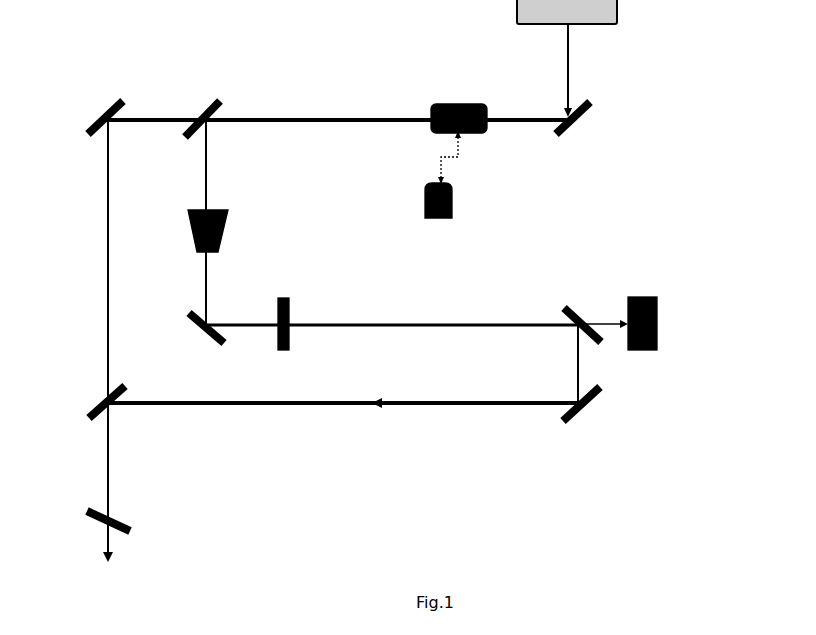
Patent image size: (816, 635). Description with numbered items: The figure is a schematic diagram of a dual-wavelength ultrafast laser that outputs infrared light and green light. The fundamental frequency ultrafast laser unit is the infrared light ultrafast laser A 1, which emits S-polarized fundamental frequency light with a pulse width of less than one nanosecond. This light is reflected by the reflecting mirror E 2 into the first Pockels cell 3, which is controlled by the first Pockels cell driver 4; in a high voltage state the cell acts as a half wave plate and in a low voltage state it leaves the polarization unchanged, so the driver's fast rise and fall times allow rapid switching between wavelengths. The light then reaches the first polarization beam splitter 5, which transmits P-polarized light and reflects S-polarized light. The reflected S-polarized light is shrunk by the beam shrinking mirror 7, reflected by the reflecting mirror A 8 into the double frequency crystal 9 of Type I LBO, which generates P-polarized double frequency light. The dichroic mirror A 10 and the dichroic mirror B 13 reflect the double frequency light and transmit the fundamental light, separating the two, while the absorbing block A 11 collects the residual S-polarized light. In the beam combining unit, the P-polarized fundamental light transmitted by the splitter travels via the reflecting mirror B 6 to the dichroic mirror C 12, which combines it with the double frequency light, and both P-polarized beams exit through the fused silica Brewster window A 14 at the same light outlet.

The infrared light ultrafast laser A 1 is at (618, 8).
The reflecting mirror E 2 is at (583, 126).
The first Pockels cell 3 is at (432, 105).
The first Pockels cell driver 4 is at (424, 202).
The first polarization beam splitter 5 is at (196, 112).
The reflecting mirror B 6 is at (110, 106).
The beam shrinking mirror 7 is at (190, 212).
The reflecting mirror A 8 is at (196, 332).
The double frequency crystal 9 is at (290, 314).
The dichroic mirror A 10 is at (562, 314).
The absorbing block A 11 is at (642, 350).
The dichroic mirror C 12 is at (96, 403).
The dichroic mirror B 13 is at (590, 406).
The Brewster window A 14 is at (88, 517).